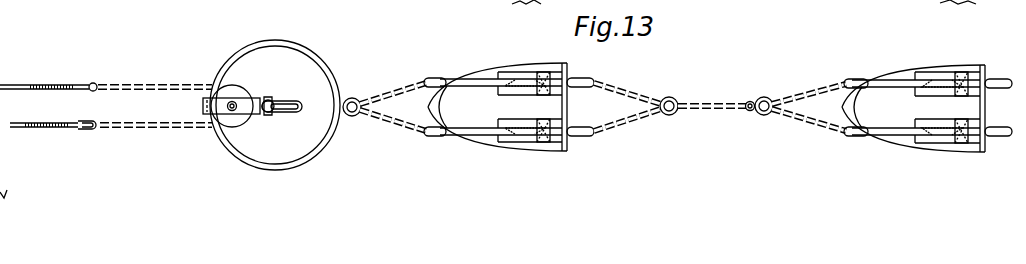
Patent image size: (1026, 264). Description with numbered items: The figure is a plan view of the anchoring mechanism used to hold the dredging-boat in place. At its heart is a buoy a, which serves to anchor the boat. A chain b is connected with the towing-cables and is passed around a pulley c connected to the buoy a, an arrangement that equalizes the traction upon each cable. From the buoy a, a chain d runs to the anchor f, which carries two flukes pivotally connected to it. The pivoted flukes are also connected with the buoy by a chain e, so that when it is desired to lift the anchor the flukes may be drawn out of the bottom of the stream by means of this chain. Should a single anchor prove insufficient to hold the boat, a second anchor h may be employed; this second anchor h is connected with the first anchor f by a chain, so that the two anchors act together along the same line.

The buoy a is at (275, 105).
The chain b is at (106, 106).
The pulley c is at (252, 100).
The chain d is at (384, 107).
The chain e is at (720, 102).
The anchor f is at (509, 107).
The second anchor h is at (927, 108).